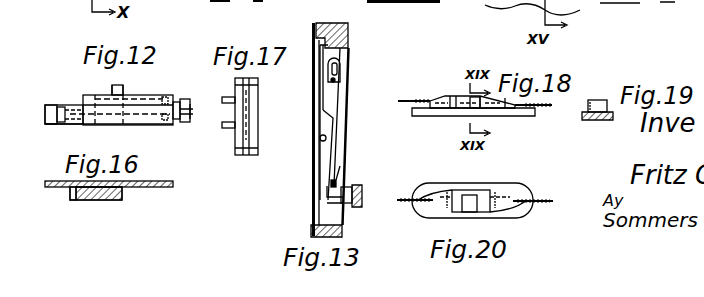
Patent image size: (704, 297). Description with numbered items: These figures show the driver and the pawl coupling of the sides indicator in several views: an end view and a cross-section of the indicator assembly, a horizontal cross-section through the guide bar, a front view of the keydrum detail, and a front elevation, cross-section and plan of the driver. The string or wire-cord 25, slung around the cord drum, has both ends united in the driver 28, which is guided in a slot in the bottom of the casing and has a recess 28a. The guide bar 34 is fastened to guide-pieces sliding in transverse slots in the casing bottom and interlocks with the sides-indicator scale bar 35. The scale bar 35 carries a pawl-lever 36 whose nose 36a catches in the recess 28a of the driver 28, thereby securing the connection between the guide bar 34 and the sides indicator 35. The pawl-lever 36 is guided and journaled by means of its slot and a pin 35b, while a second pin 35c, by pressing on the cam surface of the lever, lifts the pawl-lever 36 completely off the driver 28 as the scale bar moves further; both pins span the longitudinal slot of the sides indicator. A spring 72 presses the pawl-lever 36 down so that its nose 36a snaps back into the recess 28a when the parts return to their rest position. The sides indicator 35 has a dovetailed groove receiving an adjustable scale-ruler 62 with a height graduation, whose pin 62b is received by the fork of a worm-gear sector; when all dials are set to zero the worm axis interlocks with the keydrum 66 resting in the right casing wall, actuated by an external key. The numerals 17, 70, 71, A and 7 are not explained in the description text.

In FIG. 12, the sides-indicator scale bar 35 is at (158, 86).
In FIG. 13, the sides-indicator scale bar 35 is at (334, 15).
In FIG. 12, the nose of pawl-lever 36a is at (100, 84).
In FIG. 13, the nose of pawl-lever 36a is at (325, 192).
In FIG. 12, the adjustable scale-ruler 62 is at (87, 119).
In FIG. 12, the pin of scale-ruler 62b is at (56, 114).
In FIG. 16, the plate 17 is at (50, 181).
In FIG. 16, the guide bar 34 is at (100, 200).
In FIG. 16, the bracket 70 is at (80, 200).
In FIG. 16, the bracket flange 71 is at (70, 191).
In FIG. 16, the direction indicator A is at (122, 193).
In FIG. 17, the guide member 7 is at (249, 150).
In FIG. 17, the keydrum 66 is at (229, 122).
In FIG. 13, the pawl-lever 36 is at (338, 141).
In FIG. 13, the spring 72 is at (325, 100).
In FIG. 13, the pin 35b is at (343, 79).
In FIG. 13, the pin 35c is at (339, 178).
In FIG. 13, the driver 28 is at (355, 206).
In FIG. 18, the driver 28 is at (446, 97).
In FIG. 19, the driver 28 is at (600, 120).
In FIG. 20, the driver 28 is at (432, 193).
In FIG. 18, the string or wire-cord 25 is at (410, 108).
In FIG. 20, the string or wire-cord 25 is at (540, 196).
In FIG. 18, the recess of driver 28a is at (485, 104).
In FIG. 19, the recess of driver 28a is at (597, 100).
In FIG. 20, the recess of driver 28a is at (470, 193).